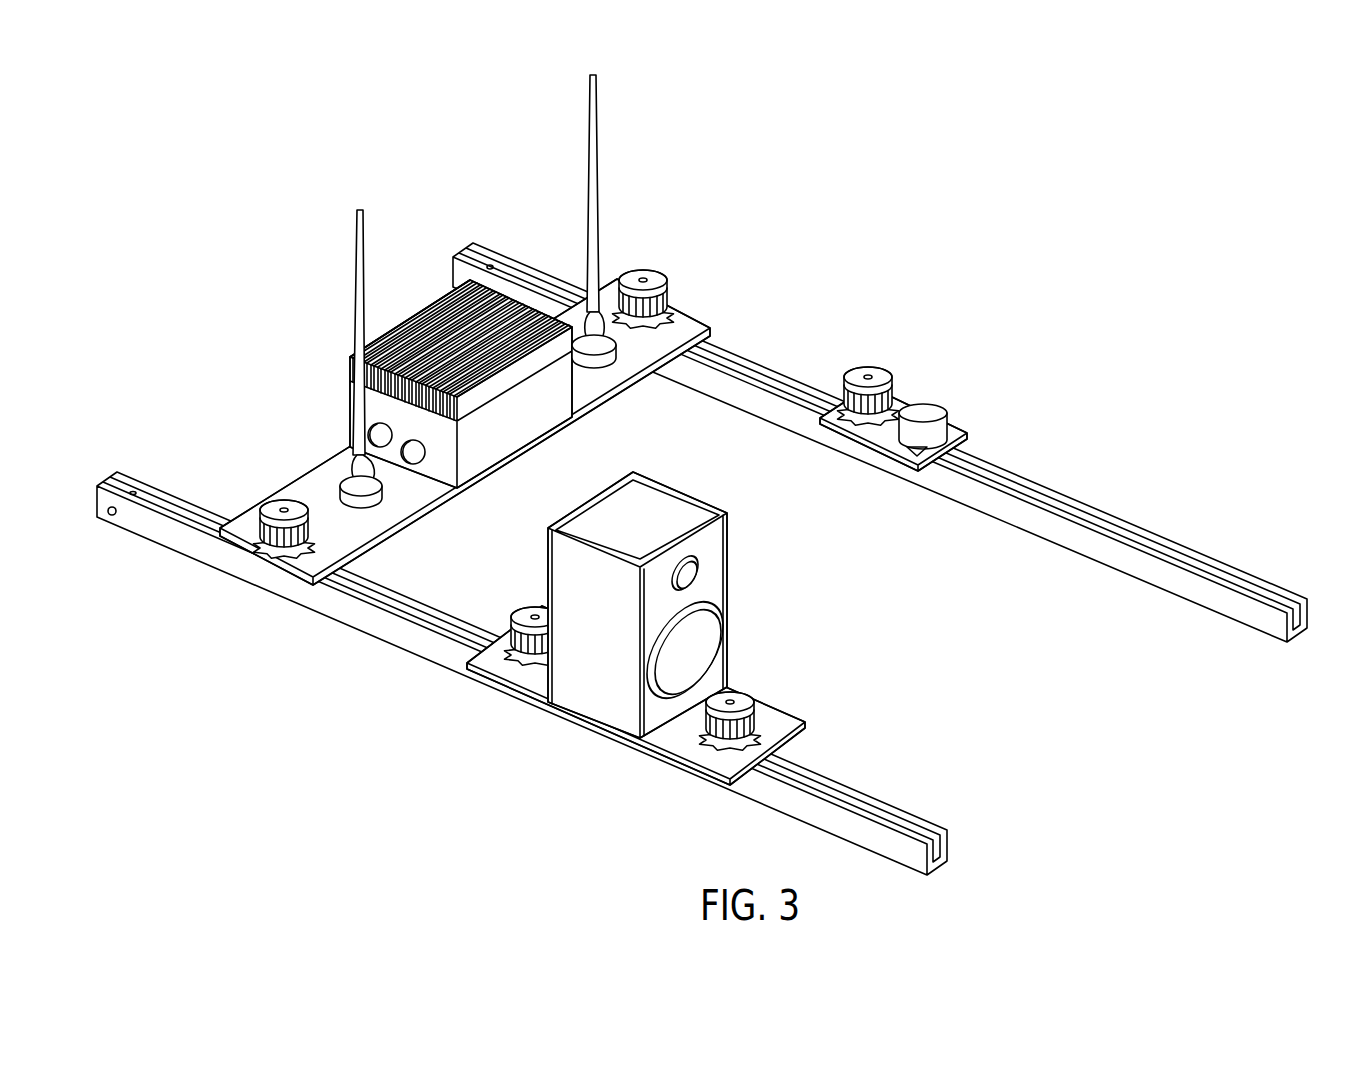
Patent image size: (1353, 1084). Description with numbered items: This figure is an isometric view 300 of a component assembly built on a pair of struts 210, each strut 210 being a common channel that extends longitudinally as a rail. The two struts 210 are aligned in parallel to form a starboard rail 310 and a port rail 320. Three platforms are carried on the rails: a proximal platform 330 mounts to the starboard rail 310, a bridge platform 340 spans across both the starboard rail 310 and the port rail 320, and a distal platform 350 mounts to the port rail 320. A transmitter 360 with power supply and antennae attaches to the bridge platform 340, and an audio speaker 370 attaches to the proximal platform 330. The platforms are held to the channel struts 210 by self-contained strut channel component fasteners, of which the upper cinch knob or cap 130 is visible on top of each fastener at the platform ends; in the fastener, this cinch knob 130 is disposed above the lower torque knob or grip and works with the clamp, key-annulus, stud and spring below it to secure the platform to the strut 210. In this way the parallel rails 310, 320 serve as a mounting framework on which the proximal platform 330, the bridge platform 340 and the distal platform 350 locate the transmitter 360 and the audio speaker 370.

The isometric view 300 is at (808, 180).
The upper cinch knob 130 is at (652, 271).
The strut 210 is at (1167, 592).
The starboard rail 310 is at (195, 557).
The port rail 320 is at (1098, 500).
The proximal platform 330 is at (510, 695).
The bridge platform 340 is at (607, 403).
The distal platform 350 is at (952, 430).
The transmitter 360 is at (350, 408).
The audio speaker 370 is at (727, 547).